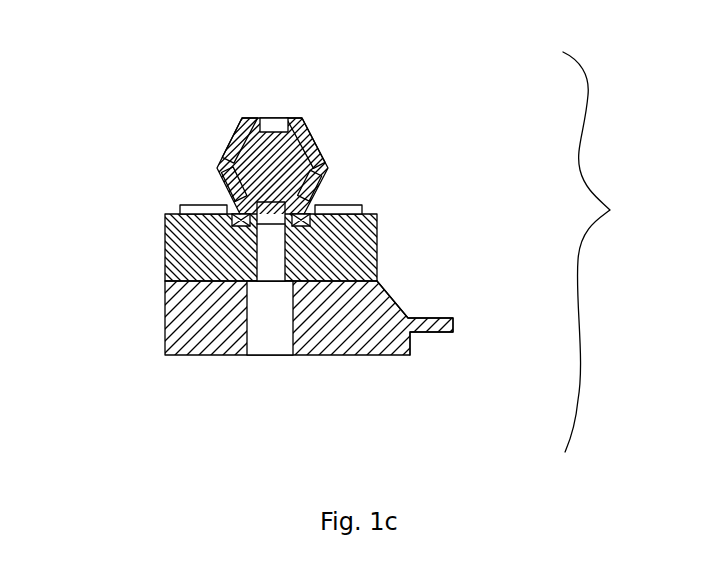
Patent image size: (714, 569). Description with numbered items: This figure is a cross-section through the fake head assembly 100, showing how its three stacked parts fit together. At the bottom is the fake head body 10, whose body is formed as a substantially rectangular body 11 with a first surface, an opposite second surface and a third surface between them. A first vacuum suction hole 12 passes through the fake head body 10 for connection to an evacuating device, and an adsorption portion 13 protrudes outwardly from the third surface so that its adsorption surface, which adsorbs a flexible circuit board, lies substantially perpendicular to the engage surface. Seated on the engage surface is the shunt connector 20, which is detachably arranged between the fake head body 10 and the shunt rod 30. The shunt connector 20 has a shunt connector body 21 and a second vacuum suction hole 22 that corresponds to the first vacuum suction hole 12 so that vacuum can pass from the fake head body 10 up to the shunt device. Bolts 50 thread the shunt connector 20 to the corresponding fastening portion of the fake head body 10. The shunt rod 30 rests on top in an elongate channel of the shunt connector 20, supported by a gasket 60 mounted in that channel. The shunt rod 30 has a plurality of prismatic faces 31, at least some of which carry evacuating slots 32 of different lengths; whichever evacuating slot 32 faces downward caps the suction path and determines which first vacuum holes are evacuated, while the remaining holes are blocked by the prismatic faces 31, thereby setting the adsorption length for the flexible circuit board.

The fake head assembly 100 is at (613, 252).
The fake head body 10 is at (281, 345).
The rectangular body 11 is at (190, 333).
The first vacuum suction hole 12 is at (262, 322).
The adsorption portion 13 is at (437, 322).
The shunt connector 20 is at (304, 193).
The shunt connector body 21 is at (190, 248).
The second vacuum suction hole 22 is at (278, 258).
The shunt rod 30 is at (371, 111).
The prismatic faces 31 is at (250, 118).
The evacuating slots 32 is at (247, 160).
The bolts 50 is at (200, 208).
The gasket 60 is at (305, 215).